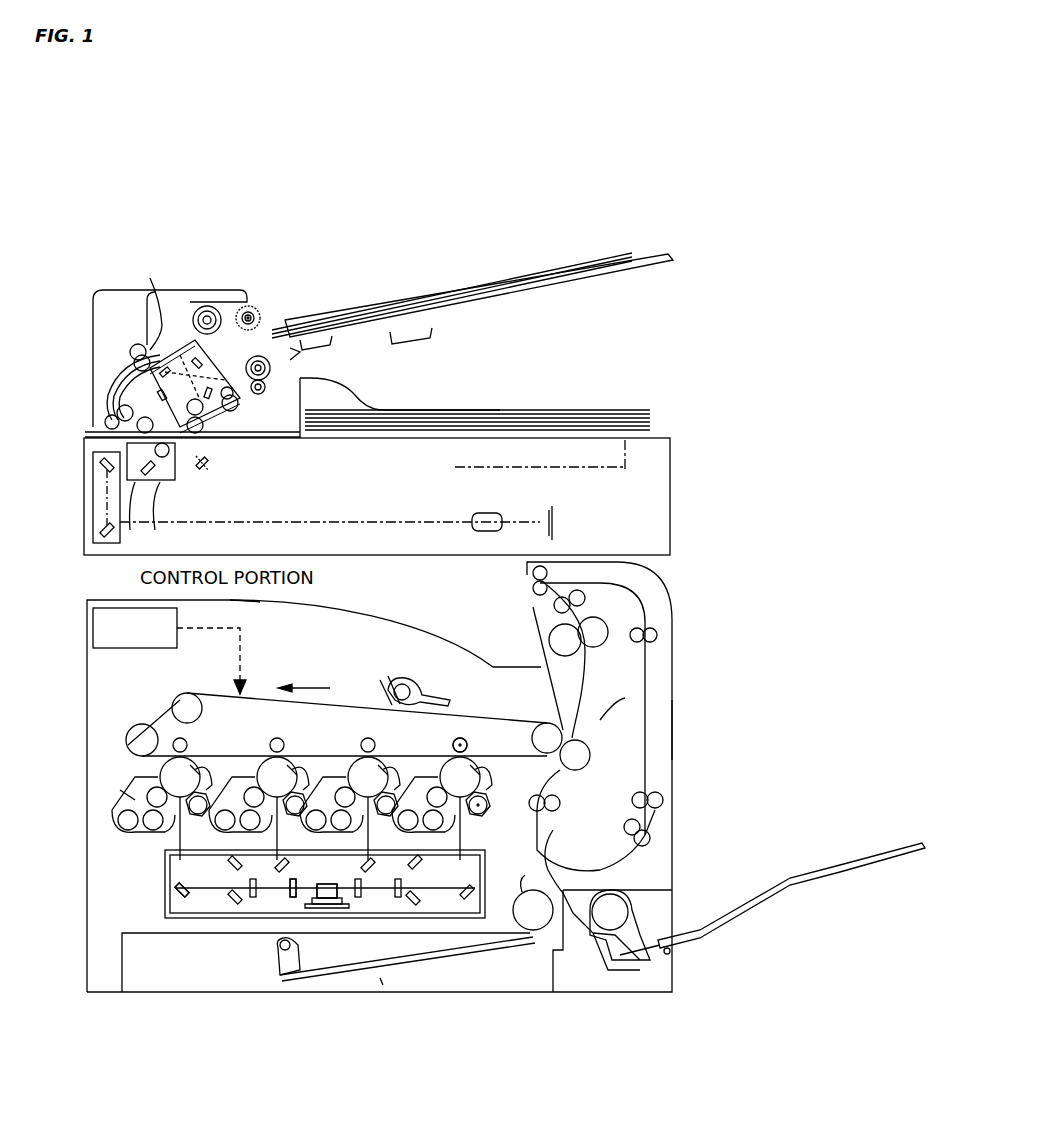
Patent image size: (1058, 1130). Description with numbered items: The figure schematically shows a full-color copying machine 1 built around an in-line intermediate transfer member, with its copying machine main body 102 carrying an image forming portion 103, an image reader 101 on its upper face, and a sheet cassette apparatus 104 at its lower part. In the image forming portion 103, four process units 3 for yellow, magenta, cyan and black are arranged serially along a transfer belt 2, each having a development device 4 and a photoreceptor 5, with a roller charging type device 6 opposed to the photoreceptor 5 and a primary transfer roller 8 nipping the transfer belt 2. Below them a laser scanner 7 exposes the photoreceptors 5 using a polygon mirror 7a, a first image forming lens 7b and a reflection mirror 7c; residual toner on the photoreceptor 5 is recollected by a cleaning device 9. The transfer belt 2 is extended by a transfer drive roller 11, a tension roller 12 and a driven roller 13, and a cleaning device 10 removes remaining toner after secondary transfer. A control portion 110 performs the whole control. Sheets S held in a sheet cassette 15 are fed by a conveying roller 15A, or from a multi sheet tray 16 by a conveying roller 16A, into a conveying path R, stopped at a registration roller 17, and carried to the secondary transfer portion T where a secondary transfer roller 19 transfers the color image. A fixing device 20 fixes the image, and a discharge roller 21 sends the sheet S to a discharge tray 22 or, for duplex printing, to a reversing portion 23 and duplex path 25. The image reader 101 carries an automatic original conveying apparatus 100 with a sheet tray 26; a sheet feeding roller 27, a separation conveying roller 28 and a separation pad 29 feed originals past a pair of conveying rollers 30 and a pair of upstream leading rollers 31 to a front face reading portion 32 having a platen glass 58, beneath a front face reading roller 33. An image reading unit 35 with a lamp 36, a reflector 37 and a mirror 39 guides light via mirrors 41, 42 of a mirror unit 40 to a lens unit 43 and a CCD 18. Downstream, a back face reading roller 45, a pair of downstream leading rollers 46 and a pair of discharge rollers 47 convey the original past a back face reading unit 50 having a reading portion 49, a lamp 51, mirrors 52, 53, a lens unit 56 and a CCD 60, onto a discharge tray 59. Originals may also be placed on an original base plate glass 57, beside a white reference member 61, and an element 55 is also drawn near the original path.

The full-color copying machine 1 is at (672, 190).
The transfer belt 2 is at (496, 715).
The process units 3 is at (303, 799).
The development device 4 is at (435, 770).
The photoreceptor 5 is at (490, 786).
The roller charging type device 6 is at (490, 812).
The laser scanner 7 is at (165, 890).
The polygon mirror 7a is at (325, 900).
The first image forming lens 7b is at (296, 900).
The reflection mirror 7c is at (182, 896).
The primary transfer roller 8 is at (460, 738).
The cleaning device 9 is at (482, 772).
The cleaning device 10 is at (425, 688).
The transfer drive roller 11 is at (548, 722).
The tension roller 12 is at (140, 724).
The driven roller 13 is at (187, 693).
The sheet cassette 15 is at (450, 960).
The conveying roller 15A is at (535, 920).
The multi sheet tray 16 is at (752, 905).
The conveying roller 16A is at (622, 905).
The registration roller 17 is at (560, 802).
The CCD 18 is at (556, 515).
The secondary transfer roller 19 is at (580, 752).
The fixing device 20 is at (615, 642).
The discharge roller 21 is at (548, 578).
The discharge tray 22 is at (342, 612).
The reversing portion 23 is at (652, 620).
The duplex path 25 is at (674, 726).
The sheet tray 26 is at (505, 310).
The sheet feeding roller 27 is at (255, 306).
The separation conveying roller 28 is at (200, 306).
The separation pad 29 is at (250, 305).
The pair of conveying rollers 30 is at (132, 346).
The pair of upstream leading rollers 31 is at (100, 406).
The front face reading portion 32 is at (118, 420).
The front face reading roller 33 is at (112, 398).
The image reading unit 35 is at (158, 485).
The lamp 36 is at (175, 472).
The reflector 37 is at (133, 485).
The mirror 39 is at (155, 475).
The mirror unit 40 is at (93, 502).
The mirror 41 is at (100, 478).
The mirror 42 is at (100, 533).
The lens unit 43 is at (486, 513).
The back face reading roller 45 is at (208, 468).
The pair of downstream leading rollers 46 is at (247, 372).
The pair of discharge rollers 47 is at (292, 354).
The reading portion 49 is at (203, 412).
The back face reading unit 50 is at (108, 355).
The lamp 51 is at (236, 408).
The mirror 52 is at (150, 310).
The mirror 53 is at (259, 394).
The document guide 55 is at (110, 375).
The lens unit 56 is at (185, 345).
The original base plate glass 57 is at (378, 440).
The platen glass 58 is at (137, 432).
The discharge tray 59 is at (462, 410).
The CCD 60 is at (228, 388).
The white reference member 61 is at (200, 433).
The automatic original conveying apparatus 100 is at (213, 290).
The image reader 101 is at (478, 556).
The copying machine main body 102 is at (672, 660).
The image forming portion 103 is at (132, 786).
The sheet cassette apparatus 104 is at (580, 992).
The control portion 110 is at (105, 608).
The conveying path R is at (527, 878).
The sheet S is at (380, 982).
The secondary transfer portion T is at (605, 728).